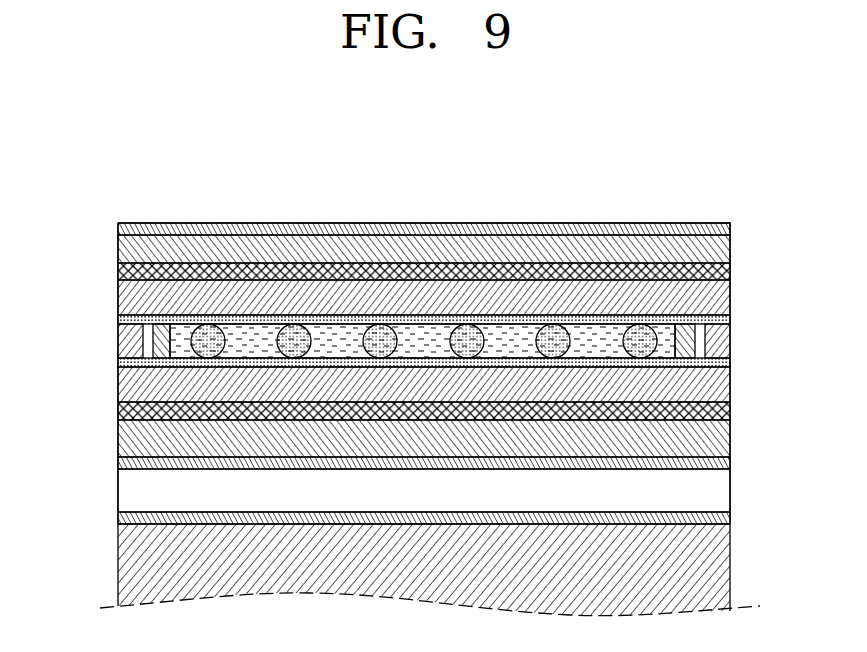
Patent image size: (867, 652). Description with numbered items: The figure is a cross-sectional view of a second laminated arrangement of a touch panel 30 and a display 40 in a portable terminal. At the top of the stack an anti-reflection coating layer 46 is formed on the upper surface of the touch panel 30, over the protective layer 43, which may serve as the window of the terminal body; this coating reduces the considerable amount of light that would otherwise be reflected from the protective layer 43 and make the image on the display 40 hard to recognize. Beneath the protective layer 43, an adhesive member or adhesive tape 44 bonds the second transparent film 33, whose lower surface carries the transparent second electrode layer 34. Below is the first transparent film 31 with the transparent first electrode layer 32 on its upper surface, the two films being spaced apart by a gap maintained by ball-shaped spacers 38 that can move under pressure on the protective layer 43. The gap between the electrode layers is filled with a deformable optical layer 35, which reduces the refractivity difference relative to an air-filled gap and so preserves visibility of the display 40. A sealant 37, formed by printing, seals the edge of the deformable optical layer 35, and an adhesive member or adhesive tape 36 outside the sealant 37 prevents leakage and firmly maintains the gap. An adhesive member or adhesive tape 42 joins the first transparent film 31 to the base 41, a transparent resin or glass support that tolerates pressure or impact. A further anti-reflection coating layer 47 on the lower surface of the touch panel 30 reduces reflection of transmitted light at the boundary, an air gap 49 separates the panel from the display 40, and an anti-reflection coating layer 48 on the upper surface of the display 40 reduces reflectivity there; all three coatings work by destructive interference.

The touch panel 30 is at (553, 207).
The AR coating layer 46 is at (121, 228).
The protective layer 43 is at (121, 251).
The adhesive member or adhesive tape 44 is at (121, 273).
The second transparent film 33 is at (121, 296).
The second electrode layer 34 is at (121, 318).
The adhesive member or adhesive tape 36 is at (121, 341).
The sealant 37 is at (163, 330).
The spacer 38 is at (208, 326).
The deformable optical layer 35 is at (255, 336).
The first electrode layer 32 is at (121, 363).
The first transparent film 31 is at (121, 386).
The adhesive member or adhesive tape 42 is at (121, 411).
The base 41 is at (121, 441).
The AR coating layer 47 is at (121, 464).
The air gap 49 is at (124, 493).
The AR coating layer 48 is at (121, 519).
The display 40 is at (121, 549).